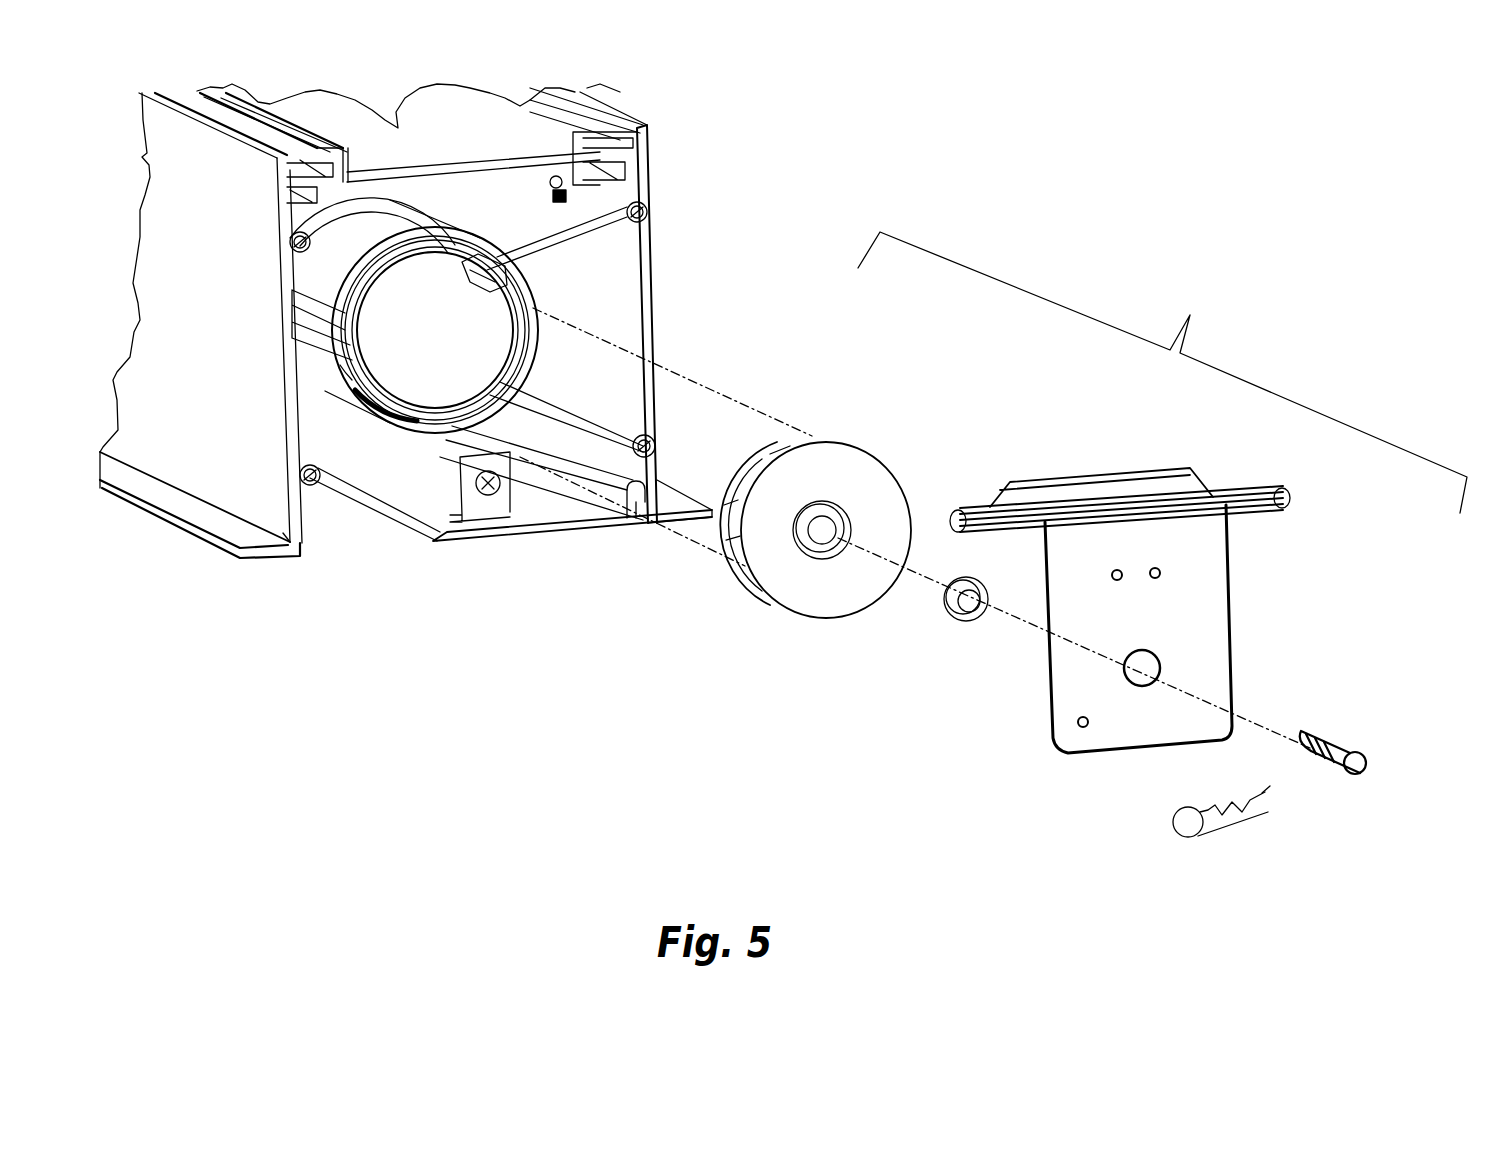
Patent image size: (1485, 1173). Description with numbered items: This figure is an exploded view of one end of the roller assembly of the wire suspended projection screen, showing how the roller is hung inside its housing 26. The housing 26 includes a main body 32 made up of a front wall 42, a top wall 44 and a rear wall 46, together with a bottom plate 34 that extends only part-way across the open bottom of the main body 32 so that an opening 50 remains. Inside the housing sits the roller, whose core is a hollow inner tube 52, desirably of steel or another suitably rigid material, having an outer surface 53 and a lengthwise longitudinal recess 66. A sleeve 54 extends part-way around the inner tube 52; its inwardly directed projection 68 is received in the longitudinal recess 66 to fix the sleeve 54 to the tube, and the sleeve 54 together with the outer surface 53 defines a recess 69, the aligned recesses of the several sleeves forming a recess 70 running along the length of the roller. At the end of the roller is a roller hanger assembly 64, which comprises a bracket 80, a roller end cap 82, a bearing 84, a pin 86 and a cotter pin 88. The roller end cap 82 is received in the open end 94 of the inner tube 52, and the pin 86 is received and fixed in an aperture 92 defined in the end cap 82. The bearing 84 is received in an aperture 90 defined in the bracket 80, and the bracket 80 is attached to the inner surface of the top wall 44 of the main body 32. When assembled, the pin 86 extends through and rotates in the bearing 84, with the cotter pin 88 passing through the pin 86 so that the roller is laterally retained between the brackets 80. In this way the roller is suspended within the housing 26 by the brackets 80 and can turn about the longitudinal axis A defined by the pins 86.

The front wall 42 is at (206, 408).
The top wall 44 is at (457, 153).
The rear wall 46 is at (617, 315).
The housing 26 is at (238, 470).
The main body 32 is at (203, 457).
The bottom plate 34 is at (531, 540).
The opening 50 is at (372, 530).
The hollow inner tube 52 is at (457, 387).
The outer surface 53 is at (352, 377).
The sleeve 54 is at (527, 277).
The roller hanger assembly 64 is at (1162, 372).
The longitudinal recess 66 is at (513, 258).
The inwardly directed projection 68 is at (612, 172).
The recess 69 is at (343, 413).
The recess 70 is at (287, 523).
The bracket 80 is at (1207, 633).
The roller end cap 82 is at (847, 439).
The bearing 84 is at (955, 622).
The pin 86 is at (1350, 760).
The cotter pin 88 is at (1177, 837).
The aperture 90 is at (1123, 685).
The aperture 92 is at (808, 548).
The open end 94 is at (403, 353).
The longitudinal axis A is at (1017, 633).